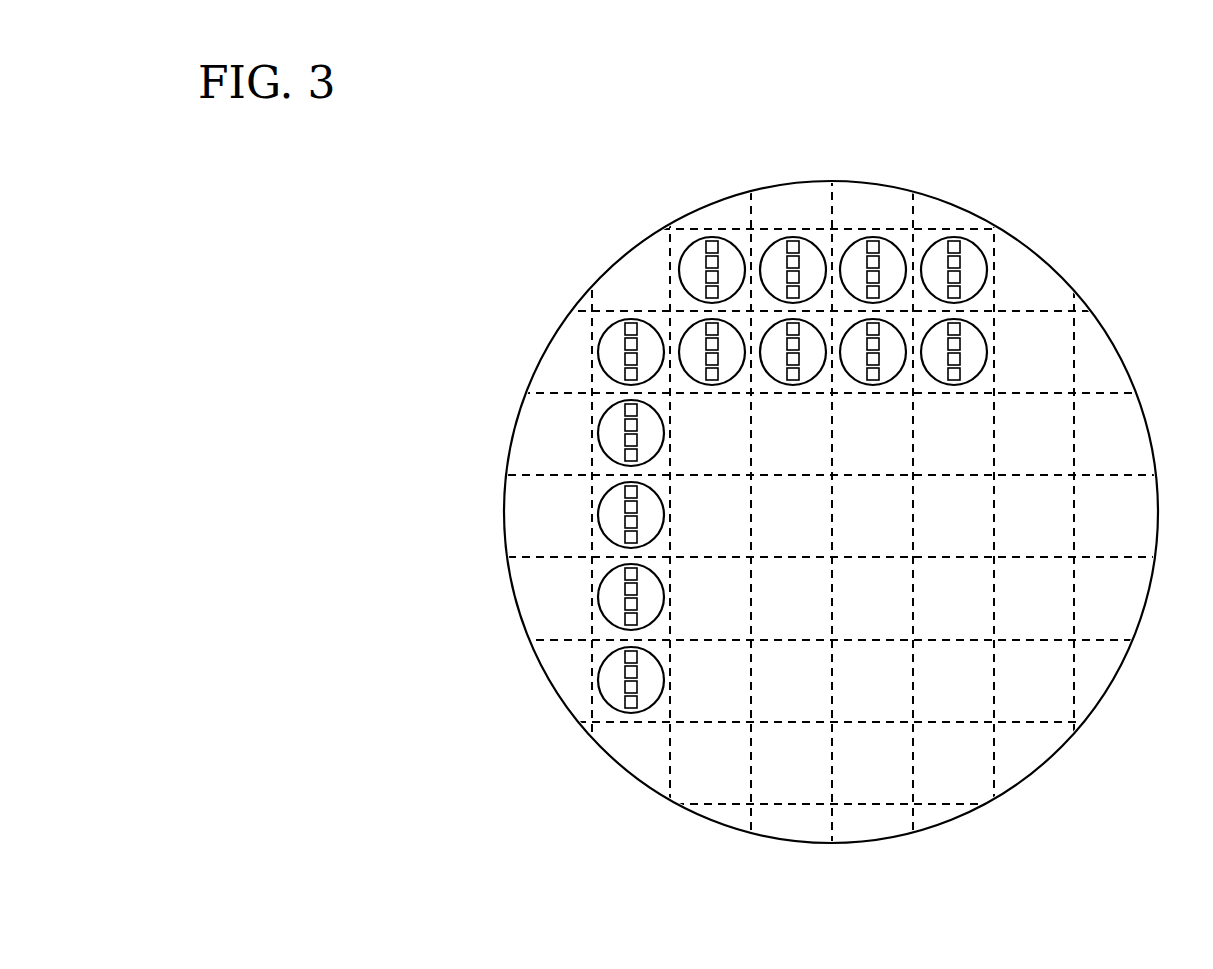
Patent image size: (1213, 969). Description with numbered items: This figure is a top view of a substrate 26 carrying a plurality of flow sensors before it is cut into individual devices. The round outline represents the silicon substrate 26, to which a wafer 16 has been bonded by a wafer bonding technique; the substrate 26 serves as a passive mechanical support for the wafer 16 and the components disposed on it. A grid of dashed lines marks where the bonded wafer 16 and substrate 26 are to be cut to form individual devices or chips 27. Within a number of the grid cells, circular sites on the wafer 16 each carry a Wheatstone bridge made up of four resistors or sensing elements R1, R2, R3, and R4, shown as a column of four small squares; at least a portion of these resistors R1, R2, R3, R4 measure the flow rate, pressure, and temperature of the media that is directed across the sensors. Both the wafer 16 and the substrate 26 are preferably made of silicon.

The wafer 16 is at (928, 250).
The substrate 26 is at (505, 530).
The chips 27 is at (1018, 475).
The resistor R1 is at (622, 329).
The resistor R2 is at (622, 345).
The resistor R3 is at (622, 360).
The resistor R4 is at (622, 375).